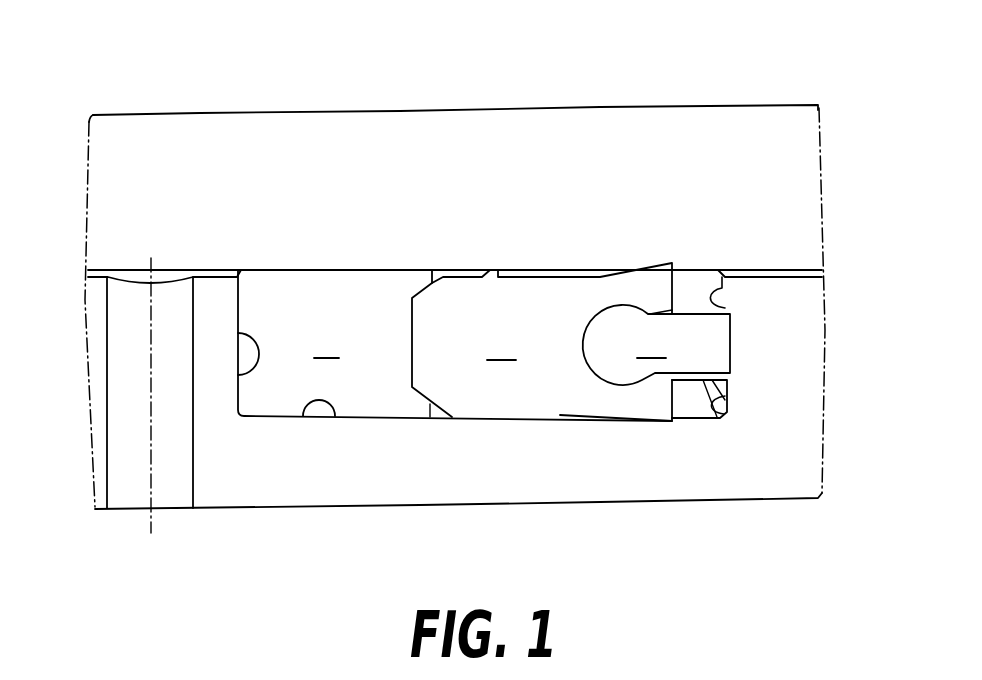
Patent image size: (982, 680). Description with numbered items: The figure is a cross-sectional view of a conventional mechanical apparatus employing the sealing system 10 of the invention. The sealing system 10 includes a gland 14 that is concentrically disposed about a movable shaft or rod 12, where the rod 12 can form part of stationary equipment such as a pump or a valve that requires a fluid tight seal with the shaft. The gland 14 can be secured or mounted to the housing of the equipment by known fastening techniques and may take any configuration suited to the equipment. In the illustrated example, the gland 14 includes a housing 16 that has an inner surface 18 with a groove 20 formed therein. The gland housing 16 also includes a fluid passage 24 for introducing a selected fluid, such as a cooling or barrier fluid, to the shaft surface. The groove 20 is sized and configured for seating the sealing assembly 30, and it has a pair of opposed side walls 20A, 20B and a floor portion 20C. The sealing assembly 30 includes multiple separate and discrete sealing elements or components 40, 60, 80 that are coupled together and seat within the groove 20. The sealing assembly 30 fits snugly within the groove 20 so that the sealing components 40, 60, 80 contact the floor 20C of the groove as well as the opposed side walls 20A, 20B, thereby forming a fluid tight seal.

The sealing system 10 is at (618, 76).
The rod 12 is at (471, 283).
The gland 14 is at (827, 476).
The housing 16 is at (270, 510).
The inner surface 18 is at (775, 273).
The groove 20 is at (723, 408).
The side wall 20A is at (238, 333).
The side wall 20B is at (725, 305).
The floor portion 20C is at (327, 416).
The fluid passage 24 is at (123, 497).
The sealing assembly 30 is at (491, 259).
The sealing element 40 is at (542, 342).
The sealing element 60 is at (455, 345).
The sealing element 80 is at (656, 345).